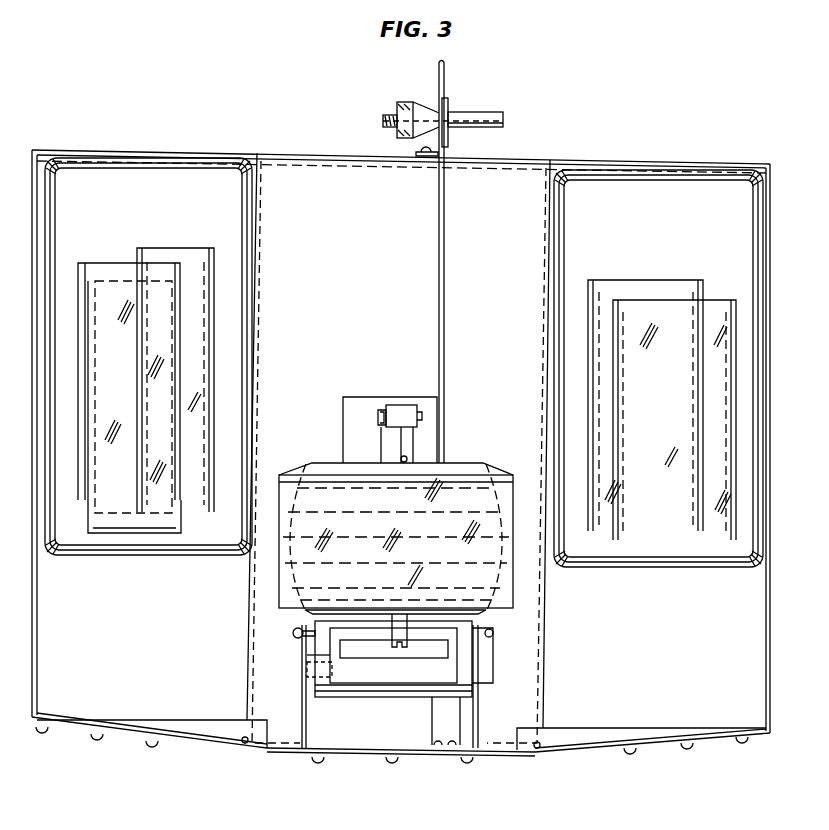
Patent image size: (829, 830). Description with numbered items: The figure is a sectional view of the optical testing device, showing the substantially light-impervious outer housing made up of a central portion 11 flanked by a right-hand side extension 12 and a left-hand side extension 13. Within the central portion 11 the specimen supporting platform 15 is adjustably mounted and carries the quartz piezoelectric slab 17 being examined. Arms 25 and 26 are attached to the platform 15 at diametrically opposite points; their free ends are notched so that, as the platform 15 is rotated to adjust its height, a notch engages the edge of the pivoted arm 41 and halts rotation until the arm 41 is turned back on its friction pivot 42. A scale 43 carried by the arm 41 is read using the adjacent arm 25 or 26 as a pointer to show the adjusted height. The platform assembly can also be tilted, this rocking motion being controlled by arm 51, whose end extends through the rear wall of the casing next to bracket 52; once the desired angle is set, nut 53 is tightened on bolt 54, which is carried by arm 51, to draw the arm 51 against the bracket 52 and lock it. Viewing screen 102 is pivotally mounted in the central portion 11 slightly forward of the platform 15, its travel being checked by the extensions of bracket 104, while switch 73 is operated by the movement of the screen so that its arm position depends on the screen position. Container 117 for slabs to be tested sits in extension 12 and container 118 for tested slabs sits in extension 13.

The central portion 11 is at (497, 756).
The right-hand side extension 12 is at (720, 712).
The left-hand side extension 13 is at (75, 700).
The specimen supporting platform 15 is at (468, 466).
The quartz piezoelectric slab 17 is at (505, 490).
The arm 25 is at (381, 444).
The arm 26 is at (410, 618).
The pivoted arm 41 is at (386, 408).
The pivot 42 is at (420, 410).
The scale 43 is at (398, 405).
The arm 51 is at (445, 231).
The bracket 52 is at (445, 76).
The nut 53 is at (413, 103).
The bolt 54 is at (490, 115).
The switch 73 is at (440, 725).
The viewing screen 102 is at (465, 670).
The bracket 104 is at (307, 656).
The container 117 is at (635, 568).
The container 118 is at (143, 556).